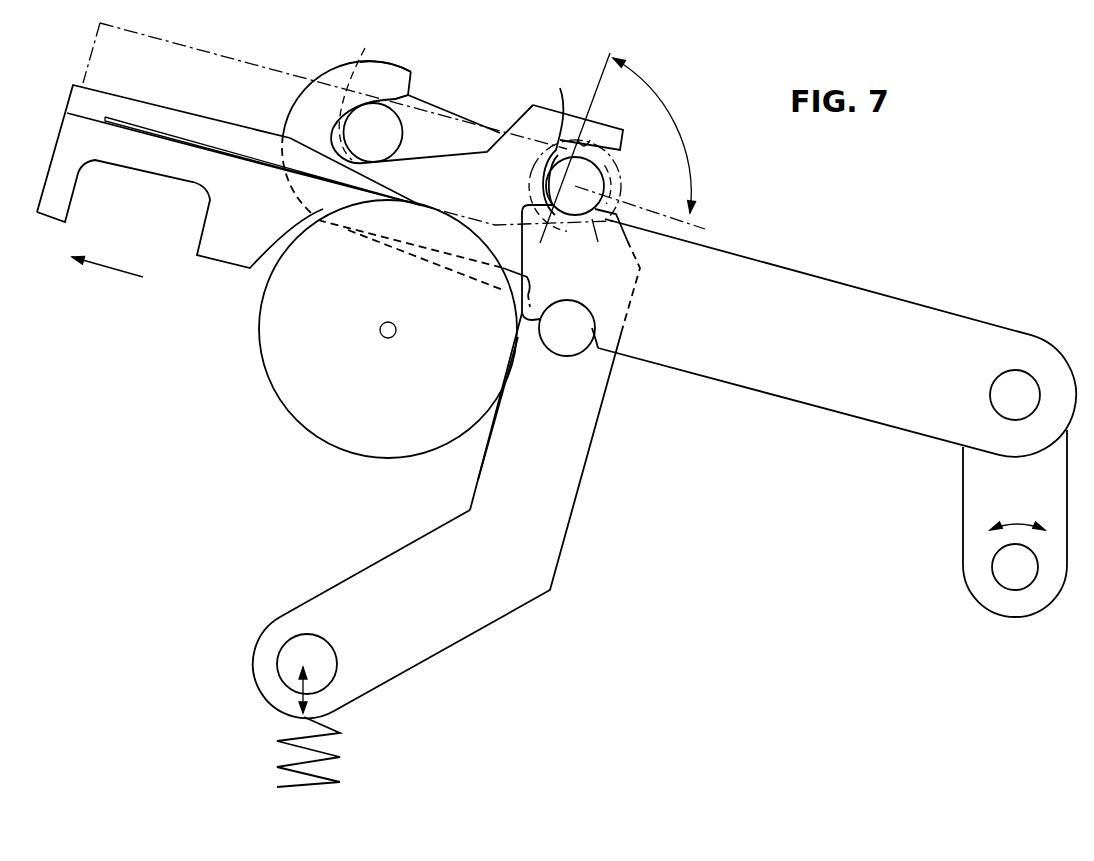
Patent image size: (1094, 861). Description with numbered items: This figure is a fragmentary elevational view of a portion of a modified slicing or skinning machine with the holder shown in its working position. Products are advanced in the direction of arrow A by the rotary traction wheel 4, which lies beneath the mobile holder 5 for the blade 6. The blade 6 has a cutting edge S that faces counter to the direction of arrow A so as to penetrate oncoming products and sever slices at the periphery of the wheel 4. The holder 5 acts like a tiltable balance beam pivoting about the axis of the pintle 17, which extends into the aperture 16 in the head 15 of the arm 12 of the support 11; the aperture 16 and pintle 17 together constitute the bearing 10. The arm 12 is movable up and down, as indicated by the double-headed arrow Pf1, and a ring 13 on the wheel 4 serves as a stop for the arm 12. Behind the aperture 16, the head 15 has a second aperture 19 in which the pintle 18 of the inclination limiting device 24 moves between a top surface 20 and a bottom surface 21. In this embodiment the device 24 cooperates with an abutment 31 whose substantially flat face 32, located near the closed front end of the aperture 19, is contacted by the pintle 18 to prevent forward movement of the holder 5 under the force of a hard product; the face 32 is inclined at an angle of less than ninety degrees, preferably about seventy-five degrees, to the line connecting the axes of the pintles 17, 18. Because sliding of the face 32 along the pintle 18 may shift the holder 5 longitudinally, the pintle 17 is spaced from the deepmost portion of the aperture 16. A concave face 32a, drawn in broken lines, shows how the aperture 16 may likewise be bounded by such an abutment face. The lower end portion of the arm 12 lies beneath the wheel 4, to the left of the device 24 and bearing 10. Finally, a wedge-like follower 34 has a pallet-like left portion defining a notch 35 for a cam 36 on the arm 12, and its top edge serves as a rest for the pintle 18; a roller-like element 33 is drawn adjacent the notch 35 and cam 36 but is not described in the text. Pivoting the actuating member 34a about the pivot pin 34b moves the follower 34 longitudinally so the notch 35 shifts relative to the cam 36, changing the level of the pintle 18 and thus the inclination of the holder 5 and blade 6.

The rotary traction member (wheel) 4 is at (288, 383).
The mobile holder 5 is at (225, 247).
The blade 6 is at (388, 192).
The bearing 10 is at (423, 90).
The support 11 is at (530, 122).
The arm 12 is at (598, 421).
The ring 13 is at (512, 370).
The head 15 is at (410, 73).
The aperture 16 is at (410, 99).
The pintle 17 is at (400, 135).
The pintle 18 is at (576, 186).
The aperture 19 is at (612, 158).
The top surface 20 is at (597, 145).
The bottom surface 21 is at (597, 222).
The inclination limiting device 24 is at (622, 211).
The abutment 31 is at (569, 158).
The face 32 is at (562, 126).
The concave face 32a is at (363, 94).
The roller 33 is at (578, 358).
The wedge-like follower 34 is at (758, 271).
The actuating member 34a is at (963, 490).
The pivot pin 34b is at (1000, 572).
The notch 35 is at (597, 346).
The cam 36 is at (593, 318).
The arrow indicating direction of product advance A is at (112, 270).
The cutting edge S is at (422, 204).
The double-headed arrow Pf1 is at (277, 698).